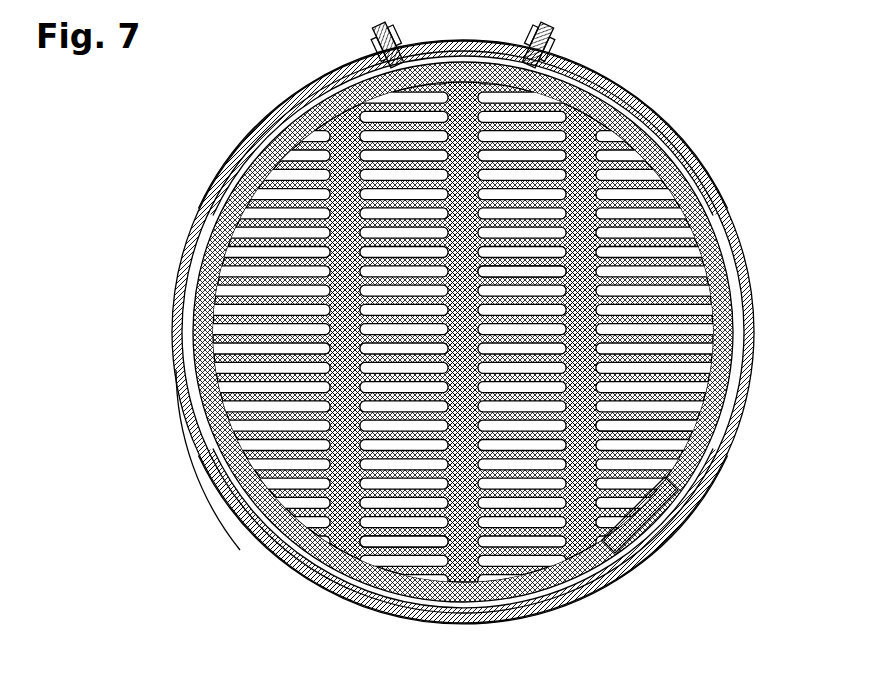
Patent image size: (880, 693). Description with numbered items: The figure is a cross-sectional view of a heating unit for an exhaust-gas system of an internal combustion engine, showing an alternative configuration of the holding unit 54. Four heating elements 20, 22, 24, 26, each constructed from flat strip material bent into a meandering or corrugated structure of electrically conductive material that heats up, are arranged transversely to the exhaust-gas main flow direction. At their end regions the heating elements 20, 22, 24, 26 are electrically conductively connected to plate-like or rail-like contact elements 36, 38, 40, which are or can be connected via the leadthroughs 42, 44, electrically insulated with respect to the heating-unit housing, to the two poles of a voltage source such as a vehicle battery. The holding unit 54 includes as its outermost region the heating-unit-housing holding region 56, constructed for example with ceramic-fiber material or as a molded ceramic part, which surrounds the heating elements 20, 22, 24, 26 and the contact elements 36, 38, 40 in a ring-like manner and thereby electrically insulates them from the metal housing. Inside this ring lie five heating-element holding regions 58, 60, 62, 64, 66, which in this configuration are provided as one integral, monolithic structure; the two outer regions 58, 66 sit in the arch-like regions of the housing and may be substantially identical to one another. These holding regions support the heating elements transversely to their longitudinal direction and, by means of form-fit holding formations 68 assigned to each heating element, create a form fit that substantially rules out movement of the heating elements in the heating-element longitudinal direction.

The heating element 20 is at (242, 230).
The heating element 22 is at (408, 552).
The heating element 24 is at (600, 573).
The heating element 26 is at (672, 437).
The contact element 36 is at (327, 100).
The contact element 38 is at (443, 592).
The contact element 40 is at (615, 95).
The leadthrough 42 is at (373, 36).
The leadthrough 44 is at (552, 36).
The holding unit 54 is at (135, 292).
The heating-unit-housing holding region 56 is at (752, 285).
The heating-element holding region 58 is at (210, 432).
The heating-element holding region 60 is at (333, 480).
The heating-element holding region 62 is at (490, 470).
The heating-element holding region 64 is at (583, 483).
The heating-element holding region 66 is at (722, 345).
The form-fit holding formation 68 is at (600, 270).